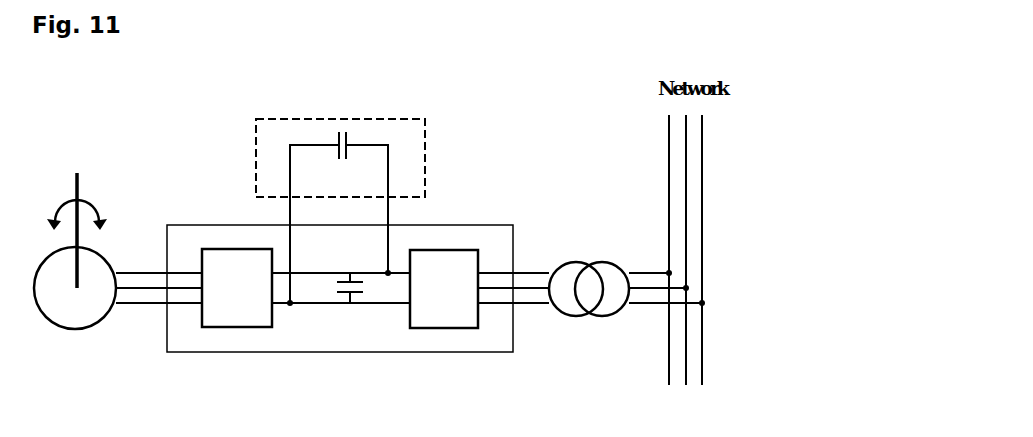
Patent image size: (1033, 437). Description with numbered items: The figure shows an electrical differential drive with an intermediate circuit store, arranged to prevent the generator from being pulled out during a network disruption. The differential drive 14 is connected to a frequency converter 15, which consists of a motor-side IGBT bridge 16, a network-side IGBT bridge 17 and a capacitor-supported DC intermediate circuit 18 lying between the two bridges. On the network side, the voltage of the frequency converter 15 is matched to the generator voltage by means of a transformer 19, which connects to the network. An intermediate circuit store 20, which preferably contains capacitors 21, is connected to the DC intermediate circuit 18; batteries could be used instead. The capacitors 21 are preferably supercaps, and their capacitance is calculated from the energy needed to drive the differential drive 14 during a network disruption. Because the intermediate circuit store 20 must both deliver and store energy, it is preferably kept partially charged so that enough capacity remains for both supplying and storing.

The differential drive 14 is at (85, 328).
The frequency converter 15 is at (479, 223).
The motor-side IGBT bridge 16 is at (237, 330).
The network-side IGBT bridge 17 is at (443, 330).
The DC intermediate circuit 18 is at (347, 305).
The transformer 19 is at (580, 317).
The intermediate circuit store 20 is at (420, 118).
The capacitors 21 is at (340, 135).